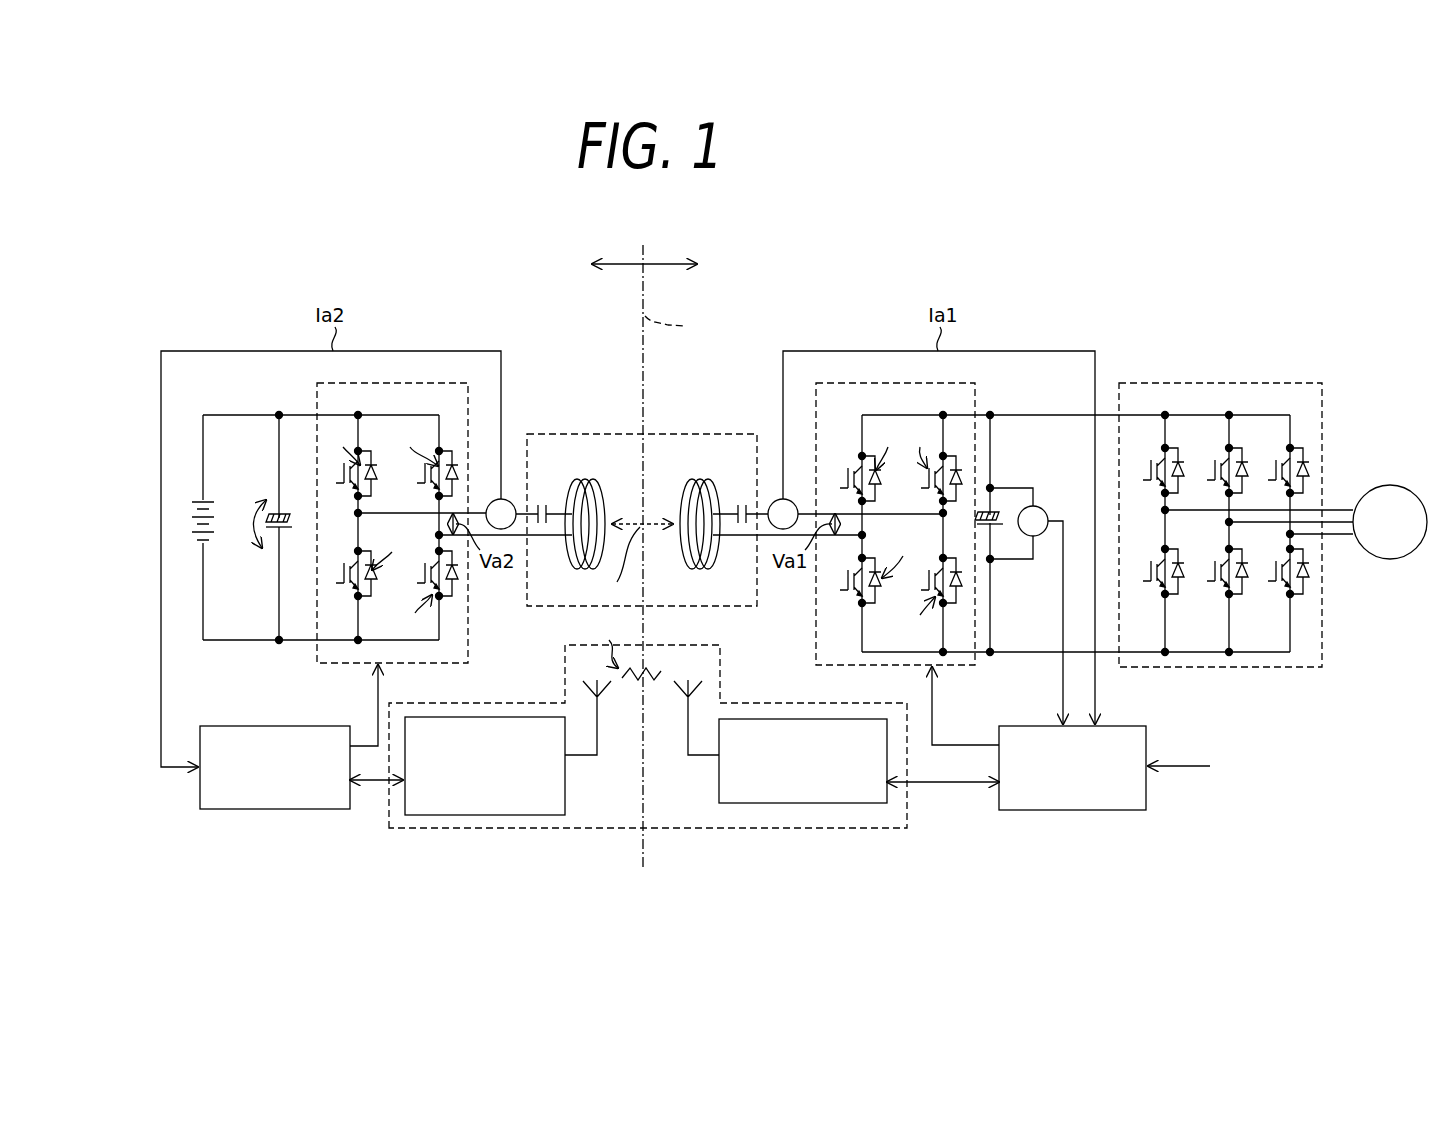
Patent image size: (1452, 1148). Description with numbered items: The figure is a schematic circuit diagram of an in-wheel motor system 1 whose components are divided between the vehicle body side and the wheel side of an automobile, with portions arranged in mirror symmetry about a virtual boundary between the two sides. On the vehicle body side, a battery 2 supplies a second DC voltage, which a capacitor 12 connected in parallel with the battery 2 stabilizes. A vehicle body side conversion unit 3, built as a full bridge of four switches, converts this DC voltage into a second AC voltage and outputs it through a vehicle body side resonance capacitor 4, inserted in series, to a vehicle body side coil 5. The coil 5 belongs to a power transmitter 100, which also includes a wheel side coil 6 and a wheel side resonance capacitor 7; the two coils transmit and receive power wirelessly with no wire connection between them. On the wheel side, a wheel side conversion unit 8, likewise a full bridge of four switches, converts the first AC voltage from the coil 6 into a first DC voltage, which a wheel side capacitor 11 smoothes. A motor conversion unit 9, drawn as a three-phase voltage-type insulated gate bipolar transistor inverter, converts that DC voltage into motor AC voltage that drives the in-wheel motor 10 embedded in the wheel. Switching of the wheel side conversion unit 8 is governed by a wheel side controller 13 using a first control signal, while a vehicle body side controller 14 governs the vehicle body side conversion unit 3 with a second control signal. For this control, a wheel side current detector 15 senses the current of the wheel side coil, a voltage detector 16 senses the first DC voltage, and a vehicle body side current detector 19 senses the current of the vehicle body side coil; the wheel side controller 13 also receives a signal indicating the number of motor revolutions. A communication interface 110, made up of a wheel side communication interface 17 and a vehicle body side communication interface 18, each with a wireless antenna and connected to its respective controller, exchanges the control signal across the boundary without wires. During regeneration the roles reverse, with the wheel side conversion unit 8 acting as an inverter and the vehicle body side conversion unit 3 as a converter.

The in-wheel motor system 1 is at (850, 237).
The battery 2 is at (197, 512).
The vehicle body side conversion unit 3 is at (401, 383).
The vehicle body side resonance capacitor 4 is at (540, 505).
The vehicle body side coil 5 is at (585, 479).
The wheel side coil 6 is at (697, 479).
The wheel side resonance capacitor 7 is at (742, 504).
The wheel side conversion unit 8 is at (915, 383).
The motor conversion unit 9 is at (1224, 383).
The in-wheel motor 10 is at (1391, 485).
The wheel side capacitor 11 is at (1000, 513).
The capacitor 12 is at (292, 521).
The wheel side controller 13 is at (1076, 811).
The vehicle body side controller 14 is at (274, 810).
The wheel side current detector 15 is at (794, 500).
The voltage detector 16 is at (1046, 510).
The wheel side communication interface 17 is at (779, 805).
The vehicle body side communication interface 18 is at (479, 816).
The vehicle body side current detector 19 is at (507, 499).
The power transmitter 100 is at (690, 434).
The communication interface 110 is at (606, 829).